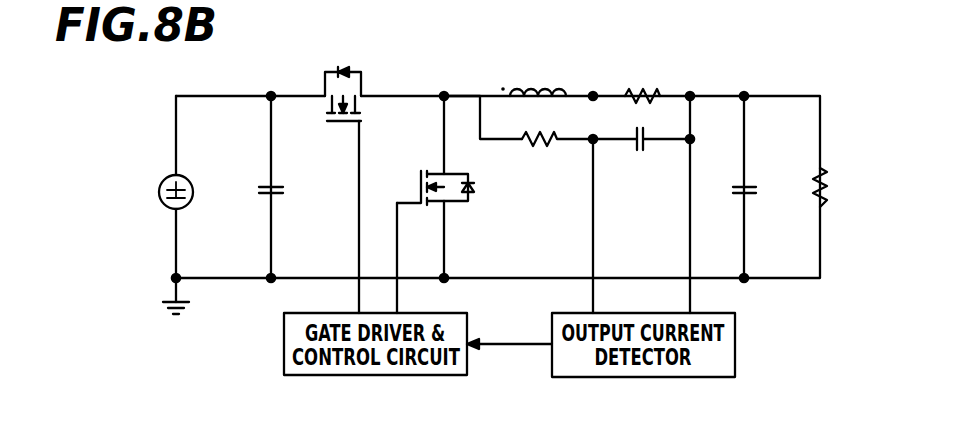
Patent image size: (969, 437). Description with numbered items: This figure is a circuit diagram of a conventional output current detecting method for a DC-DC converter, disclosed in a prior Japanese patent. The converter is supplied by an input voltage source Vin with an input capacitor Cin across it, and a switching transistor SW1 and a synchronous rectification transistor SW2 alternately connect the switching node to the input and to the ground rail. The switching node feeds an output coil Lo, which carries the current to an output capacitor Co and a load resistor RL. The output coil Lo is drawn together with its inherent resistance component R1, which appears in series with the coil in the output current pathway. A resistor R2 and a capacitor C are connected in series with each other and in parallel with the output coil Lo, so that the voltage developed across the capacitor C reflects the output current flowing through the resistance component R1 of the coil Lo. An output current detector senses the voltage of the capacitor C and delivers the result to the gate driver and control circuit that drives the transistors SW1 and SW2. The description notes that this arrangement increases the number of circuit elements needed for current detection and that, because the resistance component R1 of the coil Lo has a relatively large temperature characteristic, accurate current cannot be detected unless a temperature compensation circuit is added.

The input voltage source Vin is at (201, 192).
The input capacitor Cin is at (297, 192).
The high-side switch SW1 is at (351, 79).
The synchronous rectification transistor SW2 is at (468, 188).
The output coil Lo is at (533, 75).
The resistance component of the output coil R1 is at (643, 79).
The resistor R2 is at (518, 121).
The capacitor C is at (641, 157).
The output capacitor Co is at (763, 192).
The load resistor RL is at (838, 187).